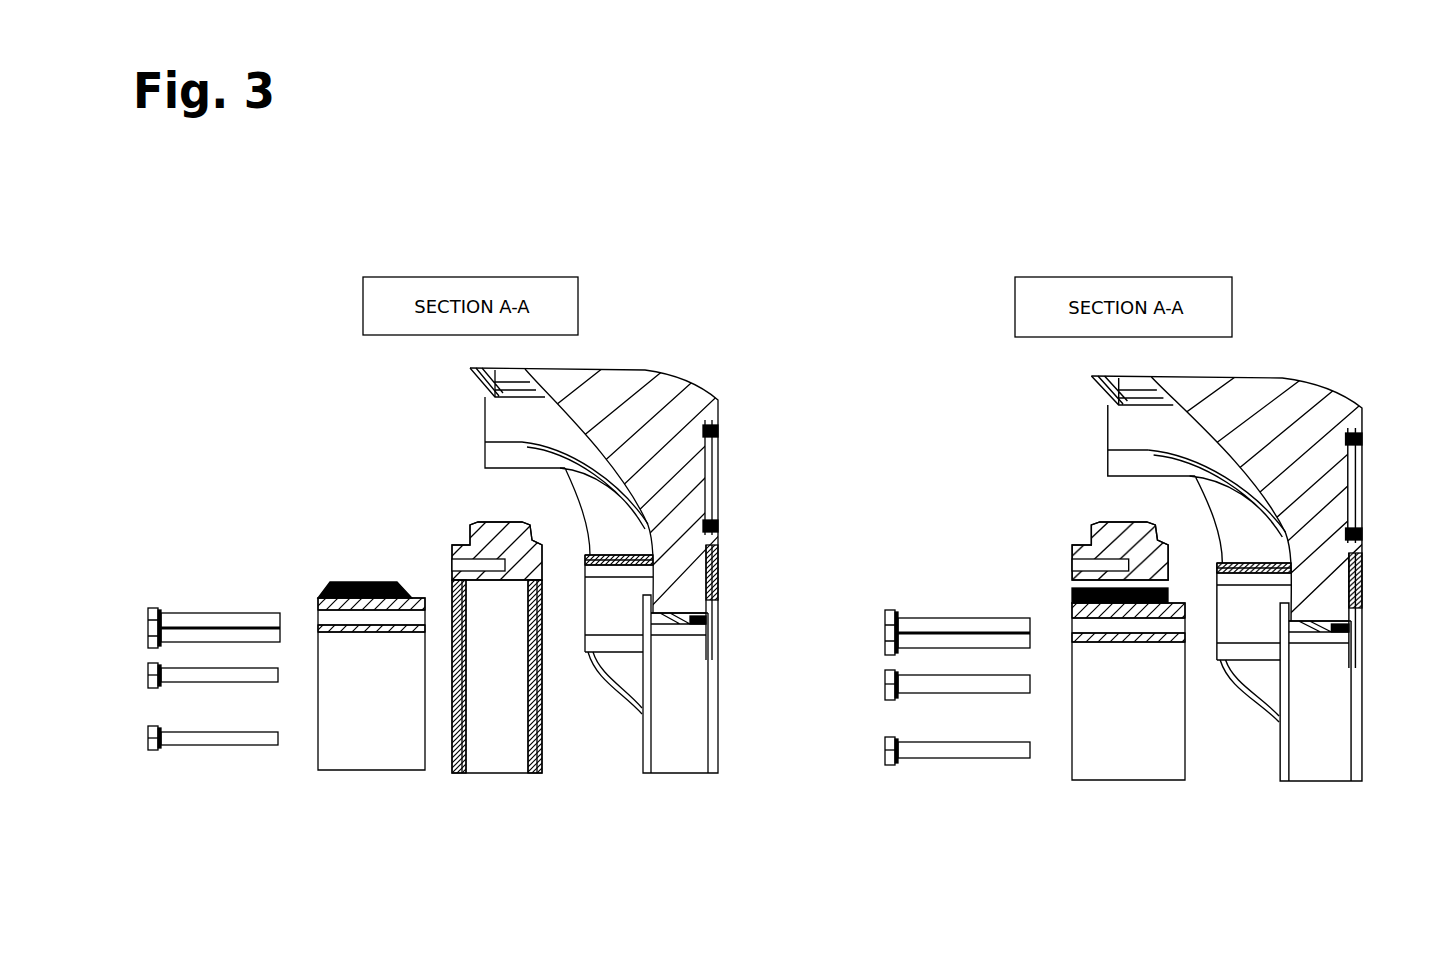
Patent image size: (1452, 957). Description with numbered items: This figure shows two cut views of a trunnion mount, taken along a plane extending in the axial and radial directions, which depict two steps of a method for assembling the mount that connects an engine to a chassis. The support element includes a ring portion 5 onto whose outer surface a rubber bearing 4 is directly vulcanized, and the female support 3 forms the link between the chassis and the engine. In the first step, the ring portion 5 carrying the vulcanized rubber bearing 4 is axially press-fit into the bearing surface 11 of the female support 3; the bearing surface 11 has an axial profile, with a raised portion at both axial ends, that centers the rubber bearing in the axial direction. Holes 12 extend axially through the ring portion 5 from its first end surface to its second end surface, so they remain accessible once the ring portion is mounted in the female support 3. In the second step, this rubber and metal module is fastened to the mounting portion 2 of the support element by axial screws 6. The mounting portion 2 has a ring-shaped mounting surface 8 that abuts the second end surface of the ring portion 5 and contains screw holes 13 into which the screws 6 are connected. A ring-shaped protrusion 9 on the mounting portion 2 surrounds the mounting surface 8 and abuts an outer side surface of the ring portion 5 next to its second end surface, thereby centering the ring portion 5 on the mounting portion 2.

The mounting portion 2 is at (675, 492).
The female support 3 is at (491, 527).
The rubber bearing 4 is at (360, 582).
The ring portion 5 is at (360, 628).
The axial screws 6 is at (216, 640).
The ring-shaped mounting surface 8 is at (662, 637).
The ring-shaped protrusion 9 is at (650, 600).
The bearing surface 11 is at (502, 763).
The holes 12 is at (388, 625).
The screw holes 13 is at (677, 618).